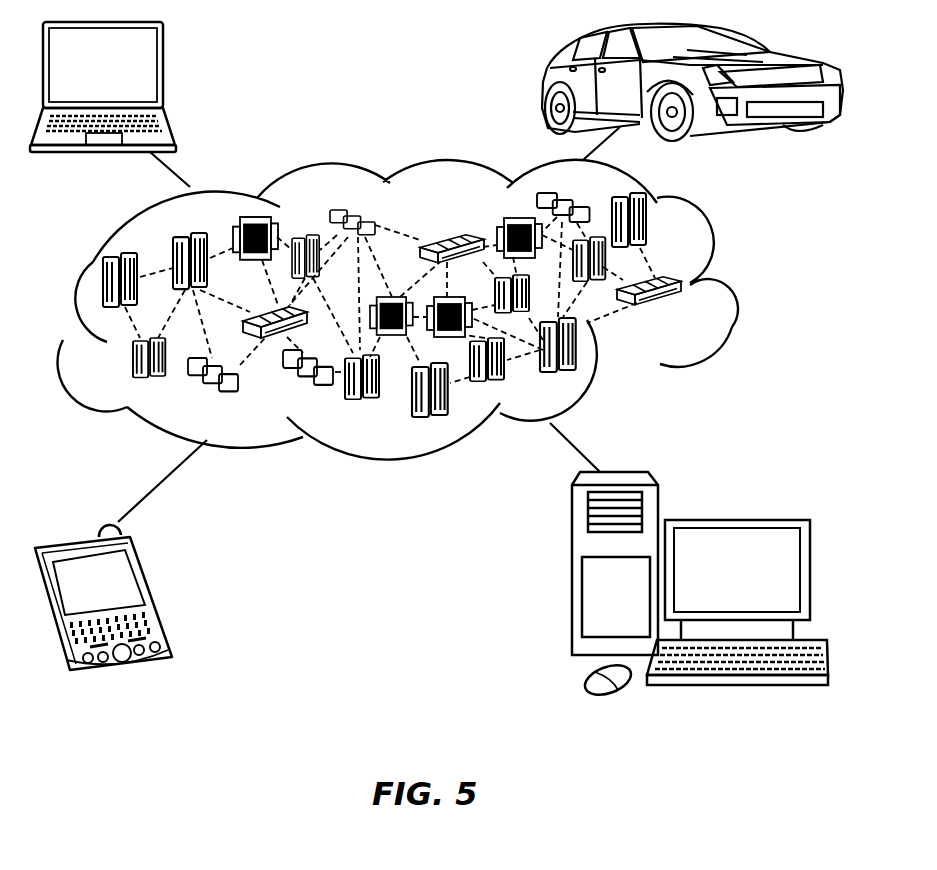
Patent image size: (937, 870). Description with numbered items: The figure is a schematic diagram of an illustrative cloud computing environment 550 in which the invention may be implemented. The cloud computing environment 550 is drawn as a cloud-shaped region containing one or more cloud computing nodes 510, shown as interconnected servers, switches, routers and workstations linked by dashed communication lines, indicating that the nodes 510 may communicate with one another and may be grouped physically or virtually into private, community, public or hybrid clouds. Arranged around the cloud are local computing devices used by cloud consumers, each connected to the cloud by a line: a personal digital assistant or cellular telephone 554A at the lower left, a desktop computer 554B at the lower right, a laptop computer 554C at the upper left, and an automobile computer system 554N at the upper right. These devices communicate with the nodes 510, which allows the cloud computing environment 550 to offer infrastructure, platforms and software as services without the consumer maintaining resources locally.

The cloud computing nodes 510 is at (692, 314).
The cloud computing environment 550 is at (735, 287).
The personal digital assistant (PDA) or cellular telephone 554A is at (153, 593).
The desktop computer 554B is at (743, 506).
The laptop computer 554C is at (163, 70).
The automobile computer system 554N is at (540, 82).